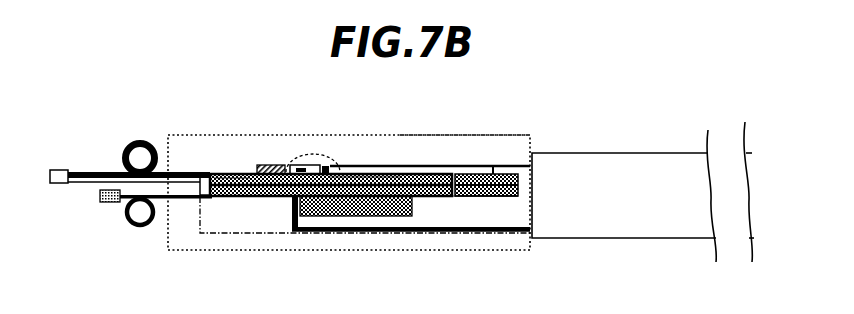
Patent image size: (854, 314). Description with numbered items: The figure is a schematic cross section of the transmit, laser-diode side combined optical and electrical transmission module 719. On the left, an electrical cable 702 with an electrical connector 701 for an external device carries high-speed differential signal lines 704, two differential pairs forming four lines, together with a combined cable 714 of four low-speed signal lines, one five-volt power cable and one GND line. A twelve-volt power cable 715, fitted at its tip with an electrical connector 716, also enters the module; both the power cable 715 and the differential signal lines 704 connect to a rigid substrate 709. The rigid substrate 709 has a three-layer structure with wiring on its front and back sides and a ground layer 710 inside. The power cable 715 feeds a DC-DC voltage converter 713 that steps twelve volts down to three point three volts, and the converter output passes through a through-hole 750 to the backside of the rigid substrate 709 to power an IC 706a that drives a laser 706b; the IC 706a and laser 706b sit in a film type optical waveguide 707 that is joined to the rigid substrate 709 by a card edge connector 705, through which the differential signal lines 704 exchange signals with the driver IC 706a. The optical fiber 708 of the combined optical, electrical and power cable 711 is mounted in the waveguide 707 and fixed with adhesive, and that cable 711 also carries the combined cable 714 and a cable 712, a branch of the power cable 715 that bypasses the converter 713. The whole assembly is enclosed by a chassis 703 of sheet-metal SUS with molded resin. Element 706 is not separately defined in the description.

The electrical connector 701 is at (55, 170).
The electrical cable 702 is at (147, 139).
The chassis 703 is at (197, 145).
The high-speed differential signal lines 704 is at (232, 177).
The card edge connector 705 is at (272, 165).
The IC for driving the laser 706a is at (302, 166).
The laser 706b is at (338, 164).
The bonding layer 706 is at (368, 174).
The film type optical waveguide 707 is at (384, 166).
The optical fiber 708 is at (513, 166).
The rigid substrate 709 is at (519, 176).
The ground layer 710 is at (483, 197).
The combined optical, electrical and power cable 711 is at (600, 153).
The cable 712 is at (433, 230).
The voltage converter 713 is at (325, 216).
The combined cable 714 is at (243, 233).
The 12 V power cable 715 is at (145, 223).
The electrical connector 716 is at (105, 202).
The combined optical and electrical transmission module 719 is at (457, 135).
The through-hole 750 is at (457, 197).